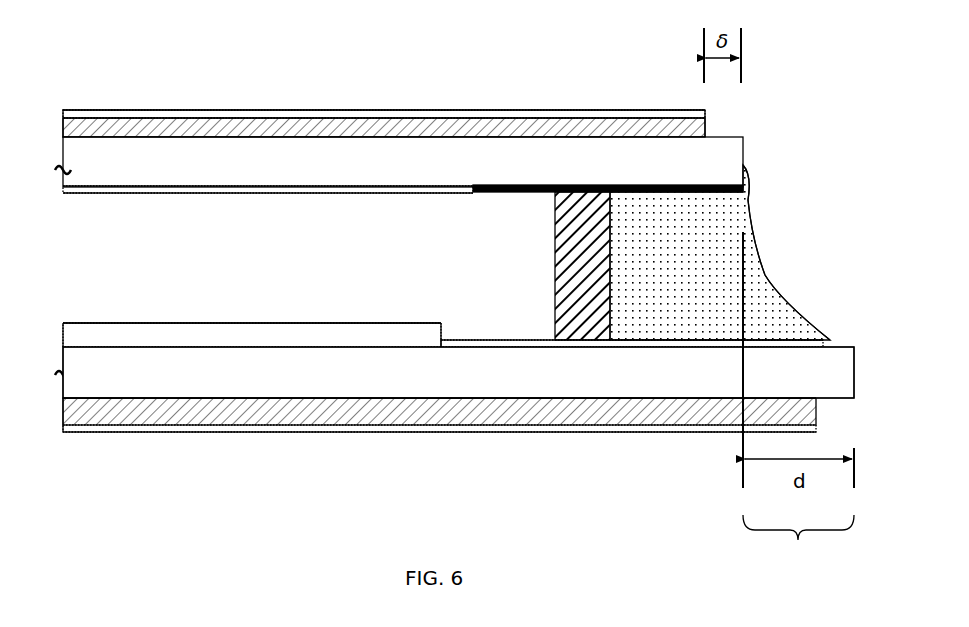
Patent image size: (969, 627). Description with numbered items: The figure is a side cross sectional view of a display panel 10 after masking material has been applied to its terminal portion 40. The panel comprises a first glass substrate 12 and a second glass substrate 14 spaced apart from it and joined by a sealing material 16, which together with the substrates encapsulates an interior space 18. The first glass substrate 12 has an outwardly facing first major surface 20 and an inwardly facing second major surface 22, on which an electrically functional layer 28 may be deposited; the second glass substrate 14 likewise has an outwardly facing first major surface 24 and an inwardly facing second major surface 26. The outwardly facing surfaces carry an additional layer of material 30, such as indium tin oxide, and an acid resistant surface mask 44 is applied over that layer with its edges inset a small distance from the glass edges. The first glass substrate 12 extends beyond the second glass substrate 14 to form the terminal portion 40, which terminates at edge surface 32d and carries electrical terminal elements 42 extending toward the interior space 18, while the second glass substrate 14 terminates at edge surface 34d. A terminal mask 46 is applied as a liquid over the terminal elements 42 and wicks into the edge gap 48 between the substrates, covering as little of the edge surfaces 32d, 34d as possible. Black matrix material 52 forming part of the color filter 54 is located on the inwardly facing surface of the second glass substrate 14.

The display panel 10 is at (503, 76).
The first glass substrate 12 is at (577, 400).
The second glass substrate 14 is at (292, 130).
The sealing material 16 is at (556, 198).
The interior space 18 is at (318, 253).
The first major surface 20 is at (127, 398).
The second major surface 22 is at (177, 340).
The first major surface 24 is at (203, 135).
The second major surface 26 is at (173, 190).
The electrically functional layer 28 is at (348, 323).
The additional layer of material 30 is at (388, 118).
The edge surface 32d is at (855, 372).
The edge surface 34d is at (743, 152).
The terminal portion 40 is at (798, 544).
The electrical terminal elements 42 is at (800, 337).
The surface mask 44 is at (608, 110).
The terminal mask 46 is at (770, 277).
The edge gap 48 is at (687, 194).
The black matrix material 52 is at (494, 195).
The color filter 54 is at (243, 193).